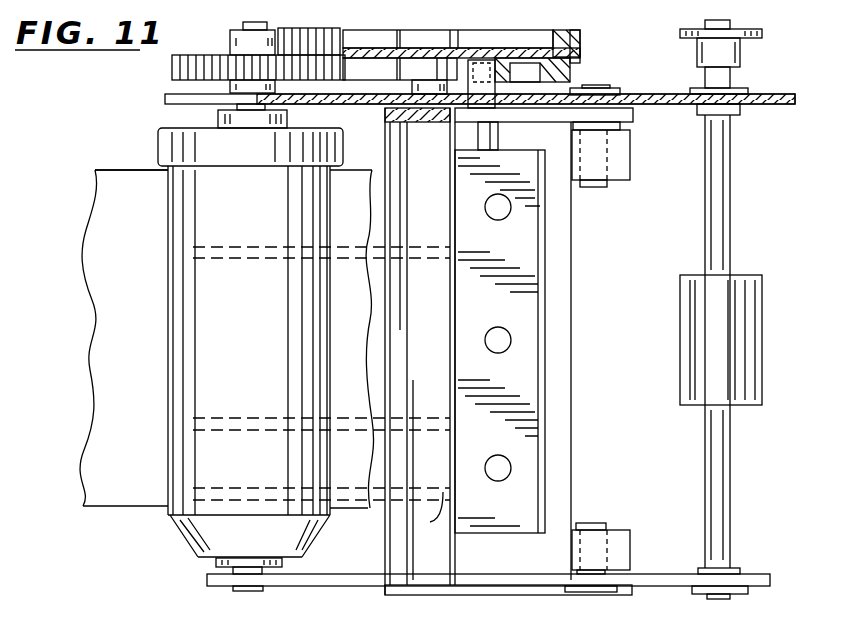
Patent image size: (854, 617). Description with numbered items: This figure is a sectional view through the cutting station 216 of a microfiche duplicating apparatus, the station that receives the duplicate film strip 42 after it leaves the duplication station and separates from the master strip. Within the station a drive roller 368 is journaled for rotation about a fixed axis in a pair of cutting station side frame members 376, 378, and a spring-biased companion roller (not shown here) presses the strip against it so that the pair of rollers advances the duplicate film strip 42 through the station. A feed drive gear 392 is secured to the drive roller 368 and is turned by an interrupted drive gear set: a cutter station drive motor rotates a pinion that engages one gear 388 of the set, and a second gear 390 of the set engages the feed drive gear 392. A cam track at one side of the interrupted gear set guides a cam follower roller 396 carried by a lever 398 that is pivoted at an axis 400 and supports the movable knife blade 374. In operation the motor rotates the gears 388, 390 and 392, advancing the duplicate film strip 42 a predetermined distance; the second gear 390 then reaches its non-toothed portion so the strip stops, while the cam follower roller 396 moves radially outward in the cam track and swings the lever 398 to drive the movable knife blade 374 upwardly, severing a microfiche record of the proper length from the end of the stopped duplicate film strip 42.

The duplicate film strip 42 is at (95, 445).
The cutting station 216 is at (72, 200).
The drive roller 368 is at (168, 372).
The movable knife blade 374 is at (508, 318).
The cutting station side frame member 376 is at (428, 367).
The cutting station side frame member 378 is at (318, 575).
The gear 388 is at (580, 40).
The second gear 390 is at (560, 68).
The feed drive gear 392 is at (172, 60).
The cam follower roller 396 is at (472, 60).
The lever 398 is at (630, 170).
The axis 400 is at (596, 187).